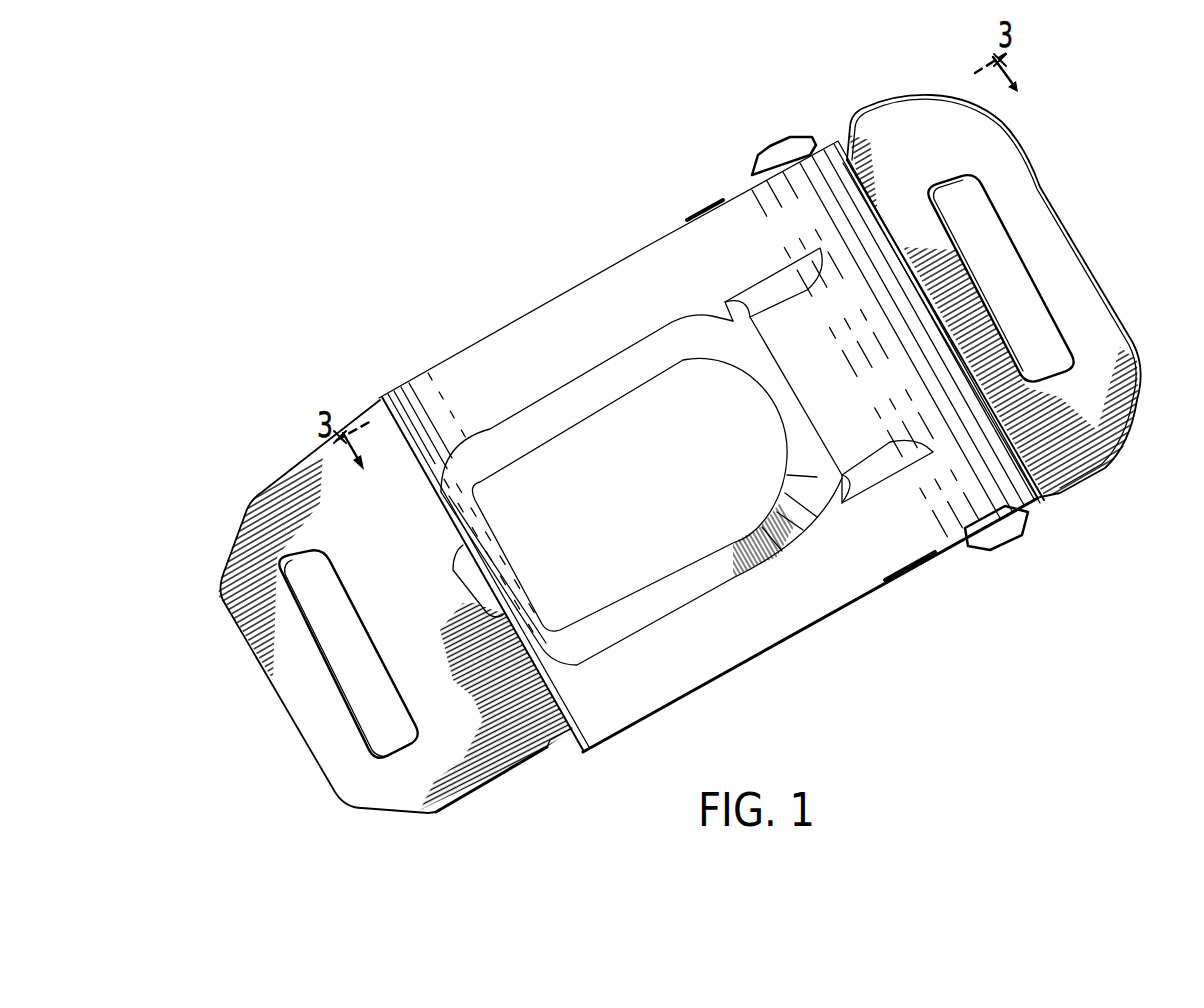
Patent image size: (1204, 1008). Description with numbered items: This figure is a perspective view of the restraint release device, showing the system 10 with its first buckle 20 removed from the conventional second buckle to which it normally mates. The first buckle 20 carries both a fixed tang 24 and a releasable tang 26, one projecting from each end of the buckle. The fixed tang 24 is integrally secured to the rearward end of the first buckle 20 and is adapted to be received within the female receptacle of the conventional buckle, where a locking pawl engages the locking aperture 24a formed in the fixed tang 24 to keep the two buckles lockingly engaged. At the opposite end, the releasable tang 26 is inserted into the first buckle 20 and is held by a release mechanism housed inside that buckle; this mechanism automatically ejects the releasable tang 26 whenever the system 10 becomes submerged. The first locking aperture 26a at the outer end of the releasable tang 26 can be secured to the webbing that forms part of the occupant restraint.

The system 10 is at (515, 250).
The first buckle 20 is at (657, 237).
The fixed tang 24 is at (263, 510).
The locking aperture 24a is at (354, 682).
The releasable tang 26 is at (1010, 175).
The first locking aperture 26a is at (1018, 300).